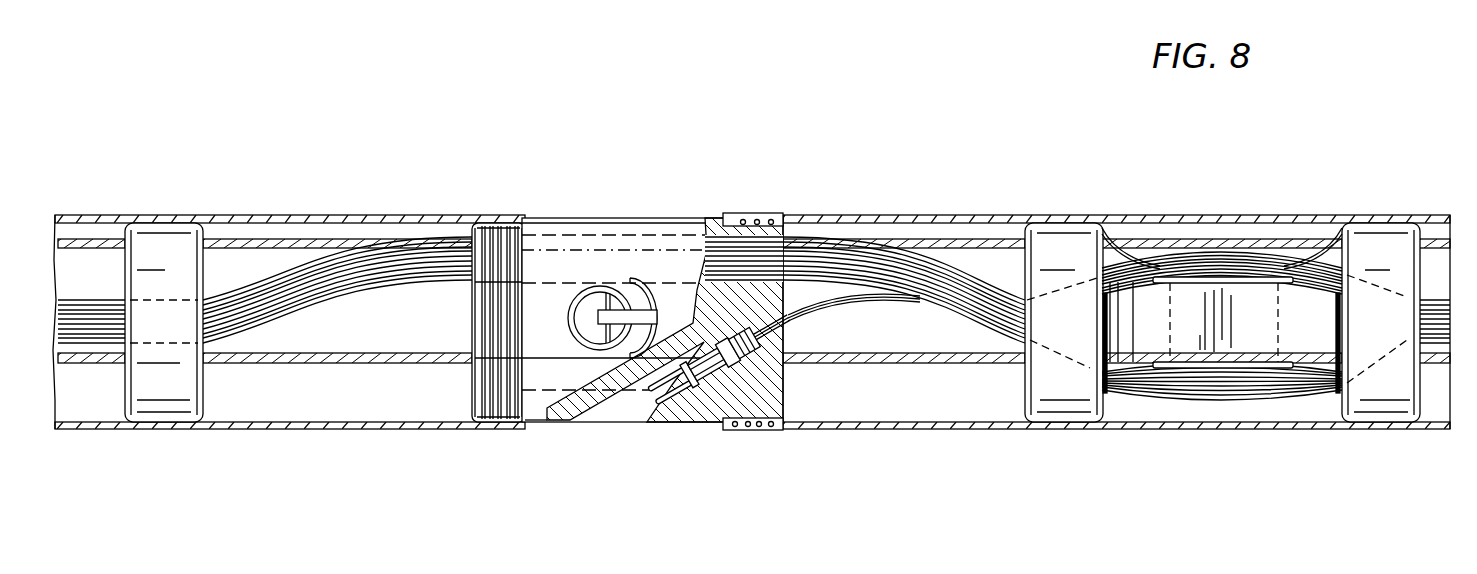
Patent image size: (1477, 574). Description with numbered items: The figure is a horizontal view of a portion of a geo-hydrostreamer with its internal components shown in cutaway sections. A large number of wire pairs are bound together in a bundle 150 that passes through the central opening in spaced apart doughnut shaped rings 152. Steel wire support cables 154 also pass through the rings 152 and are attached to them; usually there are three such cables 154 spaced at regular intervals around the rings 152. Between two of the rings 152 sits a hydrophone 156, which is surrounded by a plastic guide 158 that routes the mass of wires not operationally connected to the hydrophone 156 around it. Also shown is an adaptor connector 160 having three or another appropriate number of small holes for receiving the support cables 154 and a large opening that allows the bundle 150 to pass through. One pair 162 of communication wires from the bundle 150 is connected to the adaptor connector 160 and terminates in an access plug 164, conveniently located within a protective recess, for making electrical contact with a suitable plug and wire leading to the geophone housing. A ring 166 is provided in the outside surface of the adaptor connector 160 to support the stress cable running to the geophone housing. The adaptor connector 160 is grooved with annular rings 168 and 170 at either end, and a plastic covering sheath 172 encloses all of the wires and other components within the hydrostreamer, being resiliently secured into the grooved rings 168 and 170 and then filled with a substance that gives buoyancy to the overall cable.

The bundle 150 is at (375, 276).
The doughnut shaped rings 152 is at (170, 402).
The steel wire support cables 154 is at (355, 365).
The hydrophone 156 is at (1190, 293).
The plastic guide 158 is at (1257, 345).
The adaptor connector 160 is at (622, 218).
The pair of communication wires 162 is at (830, 308).
The access plug 164 is at (687, 385).
The ring 166 is at (583, 292).
The grooved annular ring 168 is at (503, 422).
The grooved annular ring 170 is at (760, 430).
The plastic covering sheath 172 is at (963, 215).